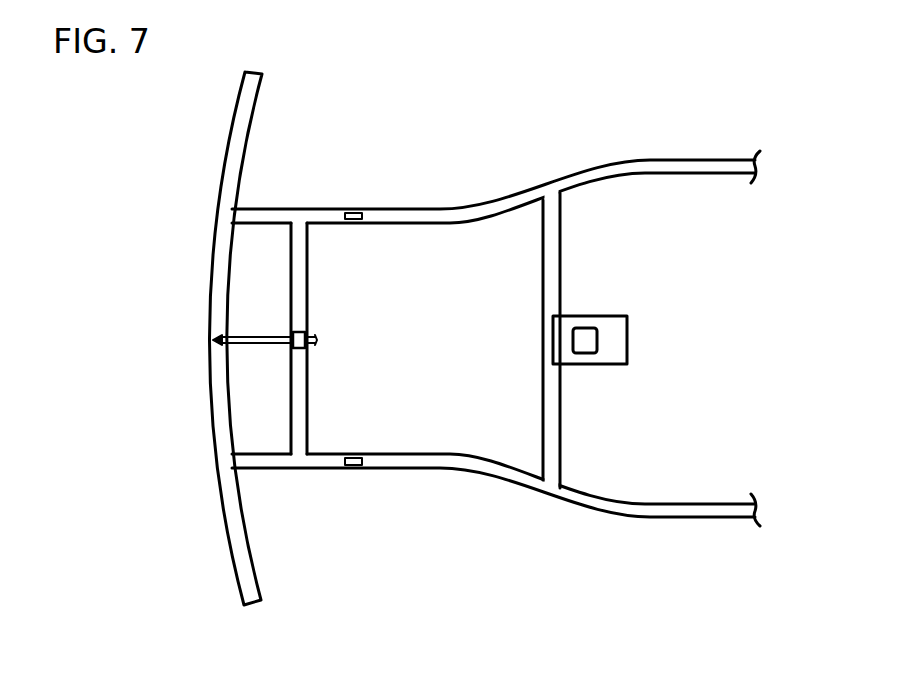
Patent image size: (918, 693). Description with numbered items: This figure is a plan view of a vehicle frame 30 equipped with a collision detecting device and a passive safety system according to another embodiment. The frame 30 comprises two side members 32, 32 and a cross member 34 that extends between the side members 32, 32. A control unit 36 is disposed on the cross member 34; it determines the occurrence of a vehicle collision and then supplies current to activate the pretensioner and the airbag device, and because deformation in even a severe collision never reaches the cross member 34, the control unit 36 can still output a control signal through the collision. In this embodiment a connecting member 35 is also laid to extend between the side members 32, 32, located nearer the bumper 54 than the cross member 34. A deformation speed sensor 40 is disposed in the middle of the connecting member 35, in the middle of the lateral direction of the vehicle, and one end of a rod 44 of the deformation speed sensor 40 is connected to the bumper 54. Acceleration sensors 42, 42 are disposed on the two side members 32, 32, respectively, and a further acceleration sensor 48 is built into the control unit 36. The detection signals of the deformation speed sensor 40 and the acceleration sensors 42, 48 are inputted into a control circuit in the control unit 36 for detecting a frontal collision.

The vehicle frame 30 is at (684, 148).
The side member 32 is at (444, 233).
The cross member 34 is at (548, 415).
The connecting member 35 is at (307, 397).
The control unit 36 is at (627, 347).
The deformation speed sensor 40 is at (300, 332).
The acceleration sensor 42 is at (368, 200).
The sensor rod 44 is at (258, 345).
The acceleration sensor 48 is at (595, 330).
The bumper 54 is at (210, 293).